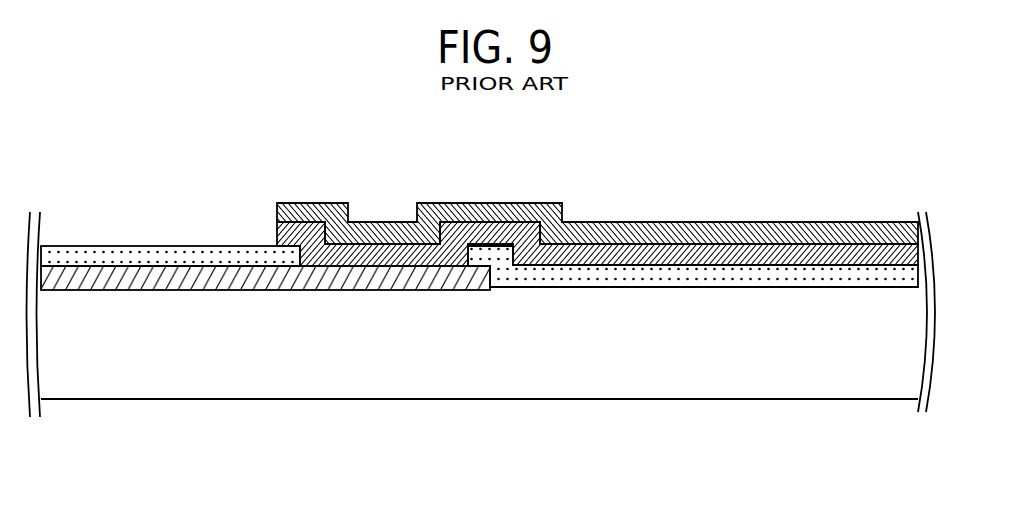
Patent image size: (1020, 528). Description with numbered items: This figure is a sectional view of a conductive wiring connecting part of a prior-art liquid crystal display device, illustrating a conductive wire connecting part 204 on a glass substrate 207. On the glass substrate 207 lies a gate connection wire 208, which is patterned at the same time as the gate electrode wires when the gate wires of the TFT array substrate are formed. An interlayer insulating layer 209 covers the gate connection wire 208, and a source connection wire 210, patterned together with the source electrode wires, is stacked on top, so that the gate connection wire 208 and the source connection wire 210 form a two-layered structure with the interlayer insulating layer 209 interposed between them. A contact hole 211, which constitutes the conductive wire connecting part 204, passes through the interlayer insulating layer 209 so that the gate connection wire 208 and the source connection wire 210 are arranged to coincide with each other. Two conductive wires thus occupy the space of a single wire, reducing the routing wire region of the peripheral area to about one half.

The conductive wire connecting part 204 is at (594, 171).
The glass substrate 207 is at (527, 358).
The gate connection wire 208 is at (338, 275).
The interlayer insulating layer 209 is at (183, 258).
The source connection wire 210 is at (648, 240).
The contact hole 211 is at (365, 247).